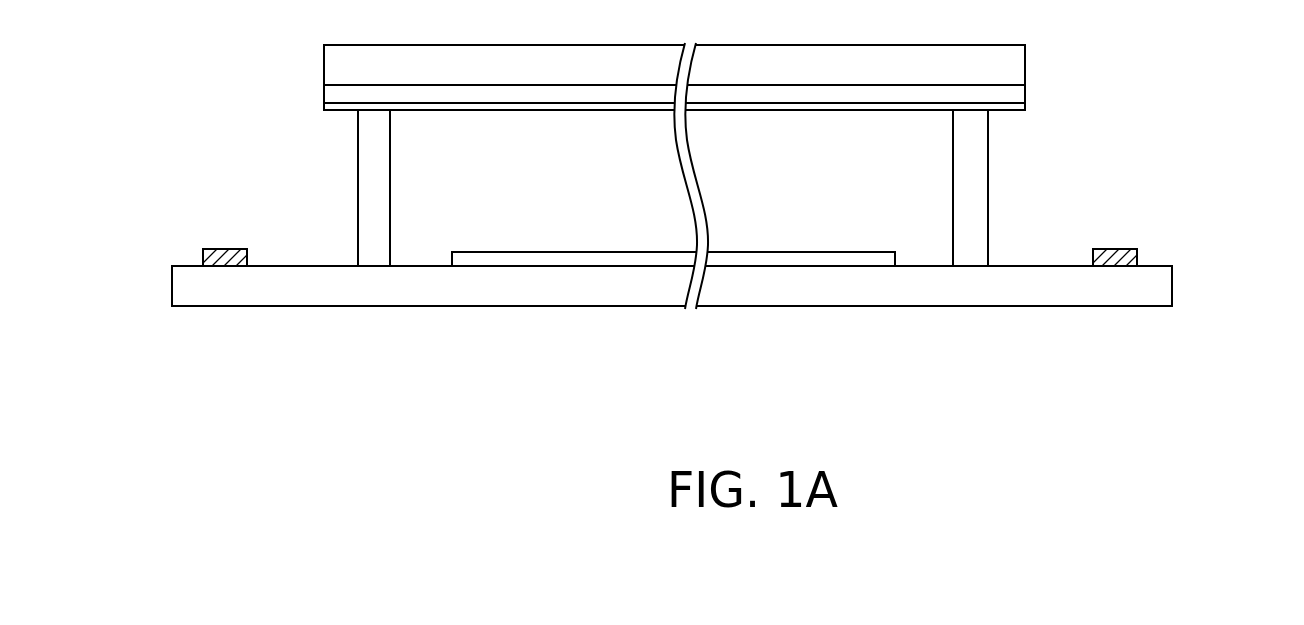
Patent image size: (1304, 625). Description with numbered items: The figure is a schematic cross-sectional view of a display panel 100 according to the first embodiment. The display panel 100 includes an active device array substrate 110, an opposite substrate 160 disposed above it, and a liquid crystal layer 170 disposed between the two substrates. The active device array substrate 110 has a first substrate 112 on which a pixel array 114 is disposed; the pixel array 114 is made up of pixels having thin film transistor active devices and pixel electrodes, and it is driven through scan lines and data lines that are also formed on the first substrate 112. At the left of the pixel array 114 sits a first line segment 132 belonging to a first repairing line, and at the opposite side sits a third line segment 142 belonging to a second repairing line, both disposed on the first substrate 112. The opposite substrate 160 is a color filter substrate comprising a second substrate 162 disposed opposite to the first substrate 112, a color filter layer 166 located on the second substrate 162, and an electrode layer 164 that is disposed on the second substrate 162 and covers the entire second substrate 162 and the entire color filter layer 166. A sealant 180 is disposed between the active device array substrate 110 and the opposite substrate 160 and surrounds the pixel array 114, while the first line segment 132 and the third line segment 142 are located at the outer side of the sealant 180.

The display panel 100 is at (1230, 434).
The active device array substrate 110 is at (722, 283).
The first substrate 112 is at (1158, 287).
The pixel array 114 is at (838, 268).
The first line segment 132 is at (220, 266).
The third line segment 142 is at (1113, 267).
The opposite substrate 160 is at (732, 81).
The second substrate 162 is at (1015, 67).
The electrode layer 164 is at (1015, 108).
The color filter layer 166 is at (1015, 97).
The liquid crystal layer 170 is at (933, 144).
The sealant 180 is at (978, 208).